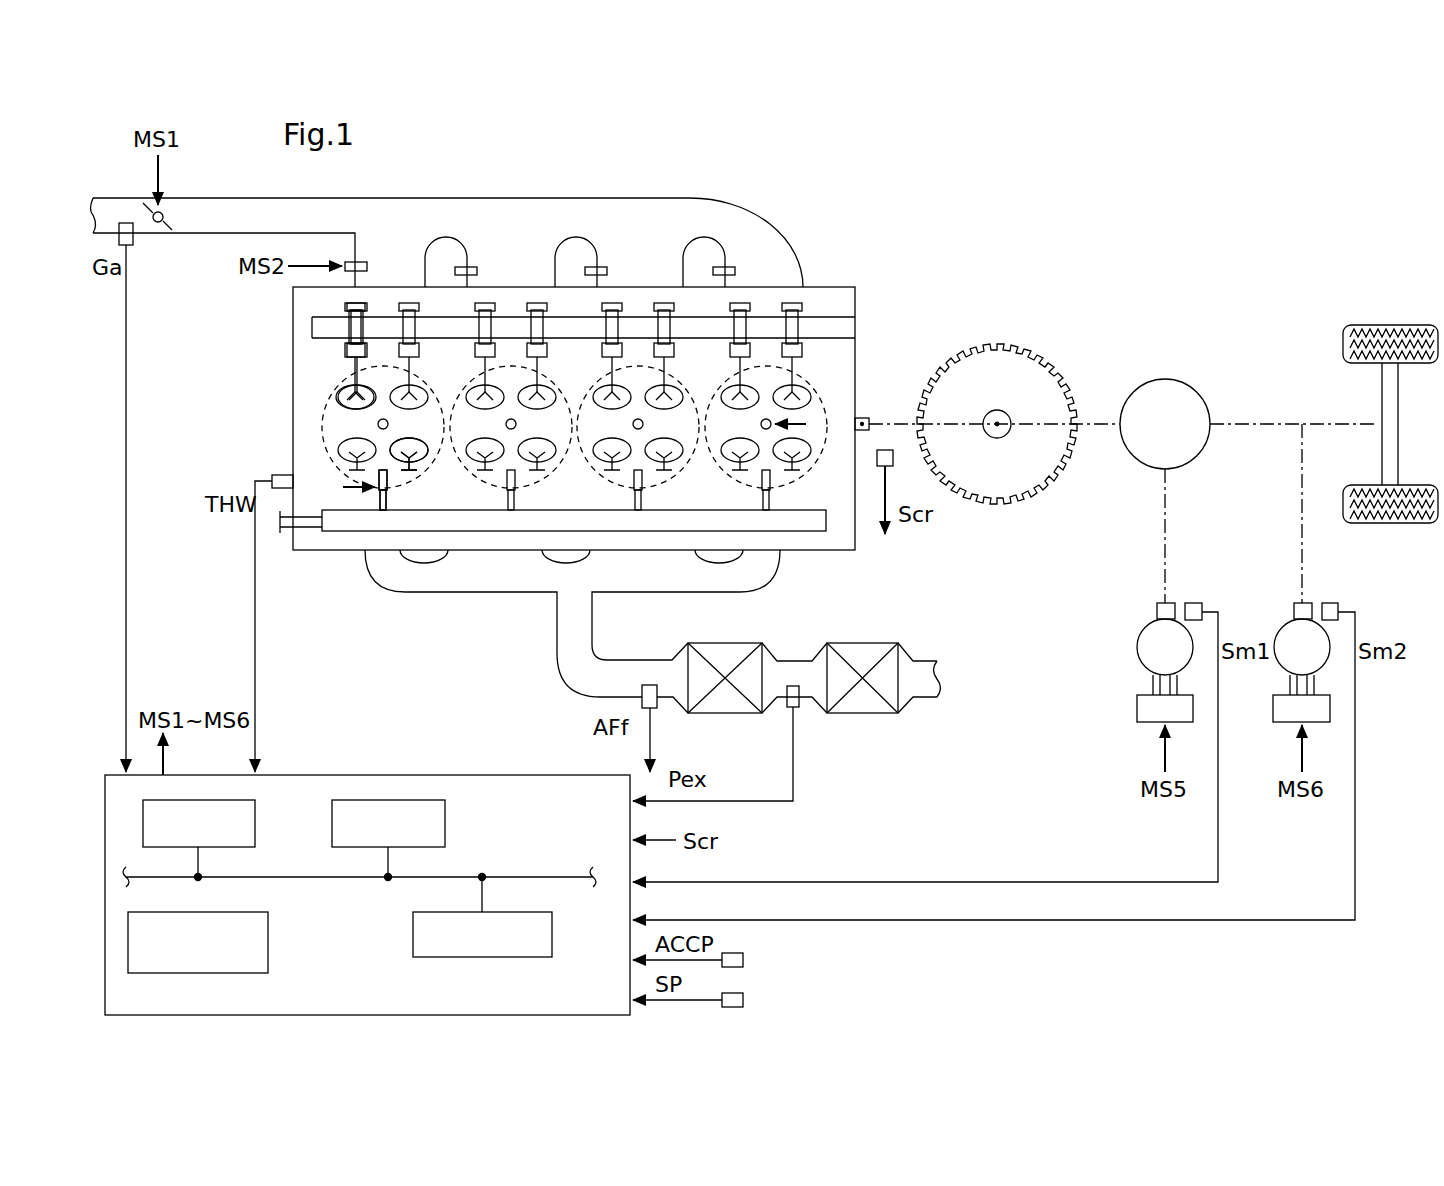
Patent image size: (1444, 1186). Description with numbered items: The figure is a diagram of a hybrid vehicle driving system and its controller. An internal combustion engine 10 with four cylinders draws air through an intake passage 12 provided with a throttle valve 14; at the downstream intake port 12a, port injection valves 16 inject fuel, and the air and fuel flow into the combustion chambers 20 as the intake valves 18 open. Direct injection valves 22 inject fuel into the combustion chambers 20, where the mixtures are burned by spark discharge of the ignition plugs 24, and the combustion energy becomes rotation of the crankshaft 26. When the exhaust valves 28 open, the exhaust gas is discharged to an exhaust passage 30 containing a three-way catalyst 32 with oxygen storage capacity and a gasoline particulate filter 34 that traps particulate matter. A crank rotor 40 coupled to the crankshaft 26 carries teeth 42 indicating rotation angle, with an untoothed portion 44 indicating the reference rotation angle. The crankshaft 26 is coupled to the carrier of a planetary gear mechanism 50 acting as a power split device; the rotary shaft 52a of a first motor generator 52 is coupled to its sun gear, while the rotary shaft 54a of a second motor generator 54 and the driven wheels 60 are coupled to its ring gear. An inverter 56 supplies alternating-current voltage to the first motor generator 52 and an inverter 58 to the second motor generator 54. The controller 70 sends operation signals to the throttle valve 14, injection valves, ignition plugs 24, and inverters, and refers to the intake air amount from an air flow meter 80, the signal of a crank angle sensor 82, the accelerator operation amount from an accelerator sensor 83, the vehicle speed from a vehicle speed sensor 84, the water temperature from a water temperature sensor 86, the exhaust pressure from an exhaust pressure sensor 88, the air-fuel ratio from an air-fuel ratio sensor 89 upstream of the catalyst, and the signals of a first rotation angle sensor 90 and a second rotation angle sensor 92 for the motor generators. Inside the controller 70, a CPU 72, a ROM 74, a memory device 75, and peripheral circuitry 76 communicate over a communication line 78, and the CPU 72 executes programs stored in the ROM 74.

The internal combustion engine 10 is at (568, 381).
The intake passage 12 is at (122, 208).
The intake port 12a is at (782, 255).
The throttle valve 14 is at (170, 210).
The port injection valves 16 is at (705, 268).
The intake valves 18 is at (345, 380).
The combustion chambers 20 is at (322, 410).
The direct injection valves 22 is at (388, 484).
The ignition plugs 24 is at (390, 425).
The crankshaft 26 is at (862, 417).
The exhaust valves 28 is at (418, 460).
The exhaust passage 30 is at (648, 592).
The three-way catalyst 32 is at (728, 643).
The gasoline particulate filter 34 is at (868, 643).
The crank rotor 40 is at (1019, 393).
The teeth 42 is at (1055, 372).
The untoothed portion 44 is at (1068, 392).
The planetary gear mechanism 50 is at (1204, 393).
The first motor generator 52 is at (1137, 647).
The rotary shaft 52a is at (1155, 612).
The second motor generator 54 is at (1276, 635).
The rotary shaft 54a is at (1294, 604).
The inverter 56 is at (1137, 712).
The inverter 58 is at (1273, 712).
The driven wheels 60 is at (1435, 525).
The controller 70 is at (367, 869).
The CPU 72 is at (257, 823).
The ROM 74 is at (446, 823).
The memory device 75 is at (554, 934).
The peripheral circuitry 76 is at (270, 942).
The communication line 78 is at (545, 875).
The air flow meter 80 is at (135, 243).
The crank angle sensor 82 is at (893, 465).
The accelerator sensor 83 is at (745, 960).
The vehicle speed sensor 84 is at (745, 1000).
The water temperature sensor 86 is at (275, 476).
The exhaust pressure sensor 88 is at (802, 710).
The air-fuel ratio sensor 89 is at (658, 710).
The first rotation angle sensor 90 is at (1193, 601).
The second rotation angle sensor 92 is at (1330, 601).